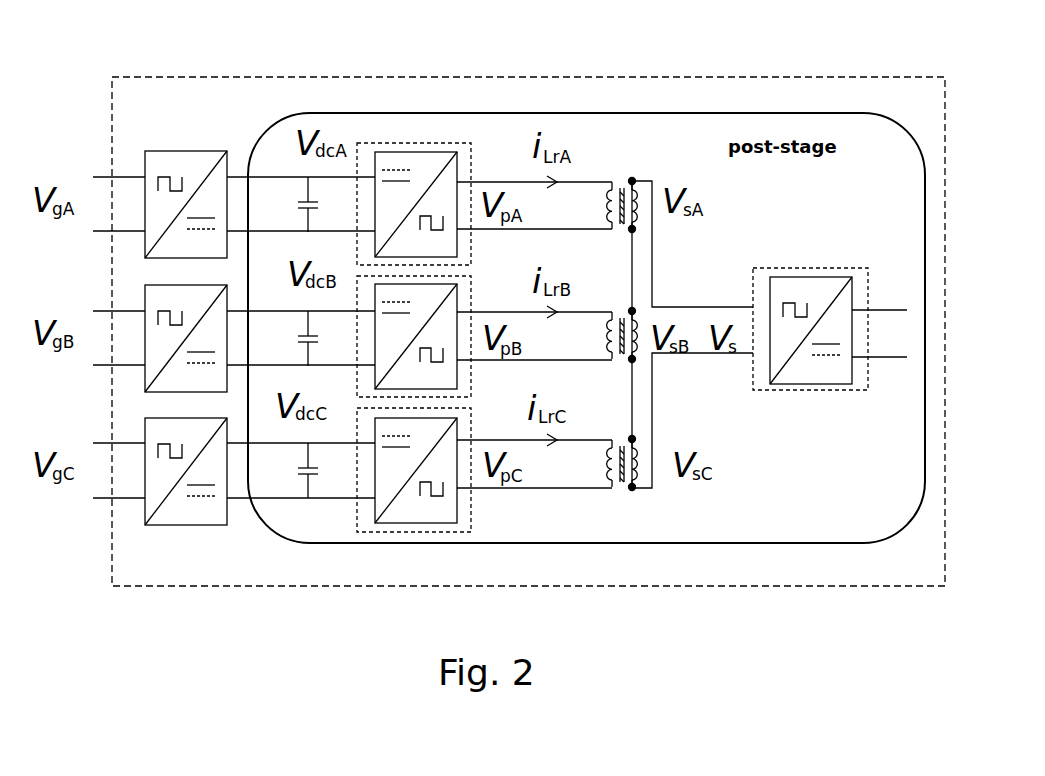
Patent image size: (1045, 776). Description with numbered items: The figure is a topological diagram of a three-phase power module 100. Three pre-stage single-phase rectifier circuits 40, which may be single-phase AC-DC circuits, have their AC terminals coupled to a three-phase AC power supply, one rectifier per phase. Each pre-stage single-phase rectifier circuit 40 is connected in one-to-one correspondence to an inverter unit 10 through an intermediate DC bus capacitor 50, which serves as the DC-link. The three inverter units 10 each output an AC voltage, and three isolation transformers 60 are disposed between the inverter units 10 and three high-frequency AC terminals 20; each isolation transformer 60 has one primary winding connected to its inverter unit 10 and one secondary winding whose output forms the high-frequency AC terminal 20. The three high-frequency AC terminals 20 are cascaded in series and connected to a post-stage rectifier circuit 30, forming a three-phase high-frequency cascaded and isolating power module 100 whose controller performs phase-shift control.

The power module 100 is at (835, 77).
The pre-stage single-phase rectifier circuit 40 is at (198, 150).
The intermediate DC bus capacitor 50 is at (300, 198).
The inverter unit 10 is at (403, 143).
The isolation transformer 60 is at (623, 205).
The high-frequency AC terminal 20 is at (632, 181).
The post-stage rectifier circuit 30 is at (800, 268).